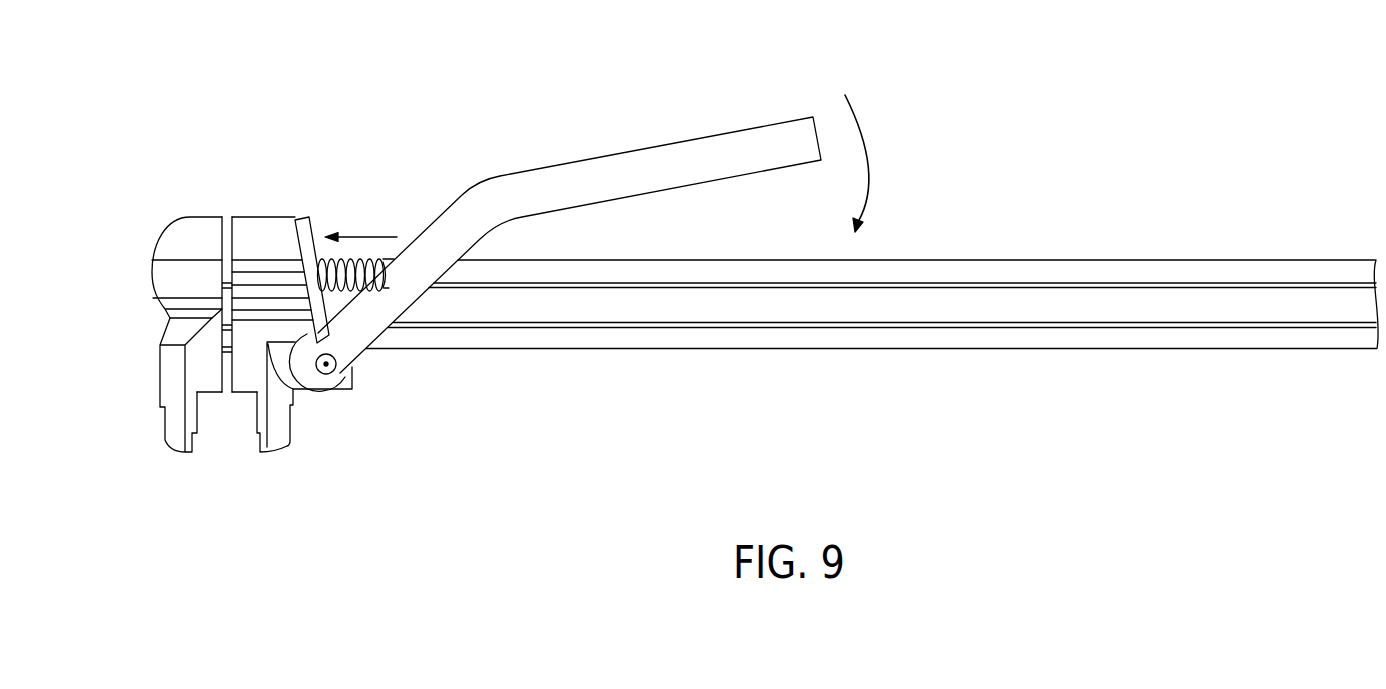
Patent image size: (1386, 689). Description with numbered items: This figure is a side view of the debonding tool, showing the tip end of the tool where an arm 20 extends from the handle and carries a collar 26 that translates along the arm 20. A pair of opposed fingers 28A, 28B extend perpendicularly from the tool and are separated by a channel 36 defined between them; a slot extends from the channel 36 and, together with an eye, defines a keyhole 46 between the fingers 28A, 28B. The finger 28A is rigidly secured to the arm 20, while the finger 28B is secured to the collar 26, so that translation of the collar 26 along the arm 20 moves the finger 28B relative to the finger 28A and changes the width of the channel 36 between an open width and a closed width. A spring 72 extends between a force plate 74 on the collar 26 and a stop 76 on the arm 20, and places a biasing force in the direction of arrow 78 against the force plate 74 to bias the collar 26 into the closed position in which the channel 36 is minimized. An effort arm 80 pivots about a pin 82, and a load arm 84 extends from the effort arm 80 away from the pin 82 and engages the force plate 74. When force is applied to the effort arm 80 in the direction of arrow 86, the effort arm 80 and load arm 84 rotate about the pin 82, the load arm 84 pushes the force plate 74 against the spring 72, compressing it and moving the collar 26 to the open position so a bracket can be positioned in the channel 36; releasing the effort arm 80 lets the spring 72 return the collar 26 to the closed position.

The arm 20 is at (602, 337).
The collar 26 is at (262, 240).
The finger 28A is at (176, 378).
The finger 28B is at (282, 424).
The channel 36 is at (228, 447).
The keyhole 46 is at (223, 217).
The spring 72 is at (350, 290).
The force plate 74 is at (314, 234).
The stop 76 is at (378, 258).
The arrow 78 is at (364, 233).
The effort arm 80 is at (645, 176).
The pin 82 is at (331, 374).
The load arm 84 is at (297, 387).
The arrow 86 is at (865, 142).